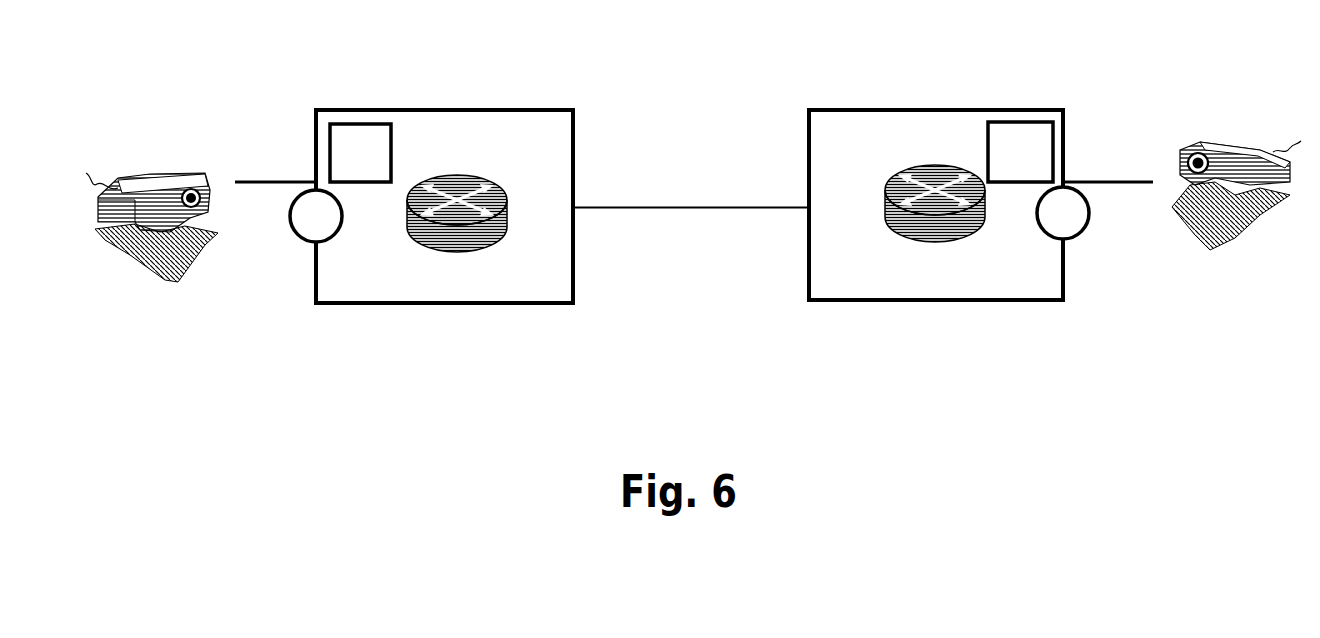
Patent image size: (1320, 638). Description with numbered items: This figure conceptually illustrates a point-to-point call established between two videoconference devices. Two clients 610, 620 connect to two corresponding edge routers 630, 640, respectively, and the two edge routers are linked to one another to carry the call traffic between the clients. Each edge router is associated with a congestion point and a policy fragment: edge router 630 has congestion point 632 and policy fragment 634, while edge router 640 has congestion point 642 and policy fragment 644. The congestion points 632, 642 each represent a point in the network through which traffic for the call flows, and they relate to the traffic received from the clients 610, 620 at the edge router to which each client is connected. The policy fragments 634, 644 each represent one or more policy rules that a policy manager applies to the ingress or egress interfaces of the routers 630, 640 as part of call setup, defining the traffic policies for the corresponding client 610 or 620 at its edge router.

The client 610 is at (205, 159).
The client 620 is at (1268, 118).
The edge router 630 is at (533, 103).
The congestion point 632 is at (360, 123).
The policy fragment 634 is at (296, 232).
The edge router 640 is at (938, 100).
The congestion point 642 is at (1025, 122).
The policy fragment 644 is at (1081, 232).